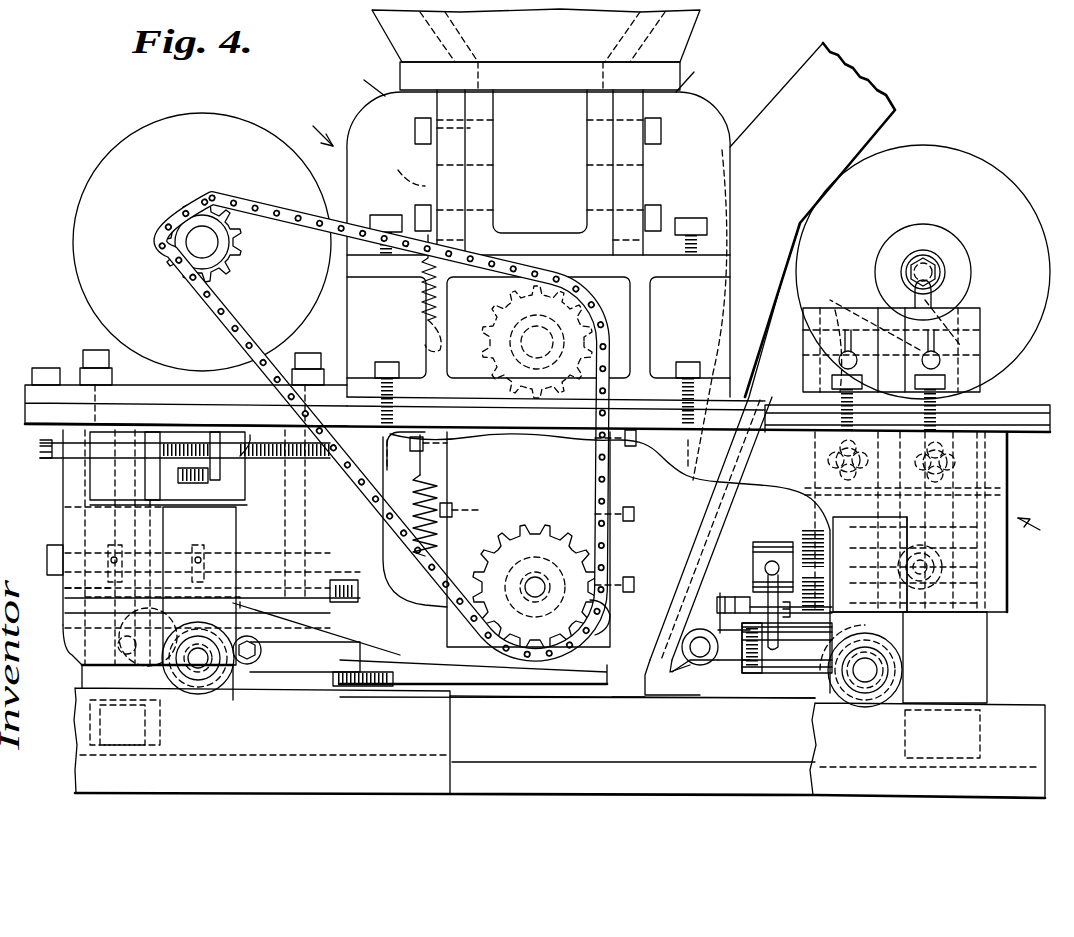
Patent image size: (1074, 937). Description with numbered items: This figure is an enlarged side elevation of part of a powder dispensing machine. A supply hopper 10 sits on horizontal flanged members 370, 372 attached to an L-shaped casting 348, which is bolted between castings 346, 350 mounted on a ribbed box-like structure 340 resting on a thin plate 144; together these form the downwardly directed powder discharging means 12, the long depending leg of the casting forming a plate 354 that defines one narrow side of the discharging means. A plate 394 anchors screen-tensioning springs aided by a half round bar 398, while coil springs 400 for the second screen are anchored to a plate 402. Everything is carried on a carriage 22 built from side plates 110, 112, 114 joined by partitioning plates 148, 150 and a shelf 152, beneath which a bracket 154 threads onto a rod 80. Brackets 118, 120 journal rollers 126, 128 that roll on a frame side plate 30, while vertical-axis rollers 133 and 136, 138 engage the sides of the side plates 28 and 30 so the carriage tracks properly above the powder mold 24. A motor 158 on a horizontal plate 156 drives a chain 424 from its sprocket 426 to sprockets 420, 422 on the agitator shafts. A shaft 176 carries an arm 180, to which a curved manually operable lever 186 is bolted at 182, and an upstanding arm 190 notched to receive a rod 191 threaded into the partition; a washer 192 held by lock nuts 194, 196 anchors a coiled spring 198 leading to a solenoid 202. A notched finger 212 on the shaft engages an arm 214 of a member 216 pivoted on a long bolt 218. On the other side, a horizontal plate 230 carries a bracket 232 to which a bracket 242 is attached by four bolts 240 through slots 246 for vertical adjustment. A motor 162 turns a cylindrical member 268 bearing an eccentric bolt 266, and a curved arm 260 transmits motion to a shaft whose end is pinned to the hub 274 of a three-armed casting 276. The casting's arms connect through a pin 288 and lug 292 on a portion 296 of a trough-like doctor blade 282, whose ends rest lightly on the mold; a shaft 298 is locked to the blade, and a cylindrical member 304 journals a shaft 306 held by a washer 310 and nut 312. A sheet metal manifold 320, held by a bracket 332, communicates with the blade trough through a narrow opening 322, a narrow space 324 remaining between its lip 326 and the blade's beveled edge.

The supply hopper 10 is at (690, 32).
The powder discharging means 12 is at (311, 126).
The carriage 22 is at (1032, 535).
The powder receiver or mold 24 is at (738, 760).
The side plate 28 is at (615, 775).
The side plate 30 is at (440, 782).
The rod 80 is at (386, 657).
The side plate 110 is at (80, 518).
The side plate 112 is at (728, 490).
The side plate 114 is at (1000, 504).
The bracket 118 is at (236, 540).
The bracket 120 is at (60, 415).
The roller 126 is at (225, 692).
The roller 128 is at (830, 690).
The roller 133 is at (975, 720).
The roller 136 is at (122, 725).
The roller 138 is at (162, 735).
The thin plate 144 is at (662, 420).
The partitioning plate 148 is at (298, 500).
The partitioning plate 150 is at (779, 505).
The shelf 152 is at (365, 650).
The bracket 154 is at (325, 610).
The horizontal plate 156 is at (148, 380).
The motor 158 is at (82, 237).
The motor 162 is at (935, 150).
The shaft 176 is at (160, 680).
The arm 180 is at (528, 690).
The bolt connection 182 is at (258, 645).
The curved manually operable lever 186 is at (68, 640).
The upstanding arm 190 is at (150, 432).
The rod 191 is at (60, 462).
The circular plate or washer 192 is at (259, 419).
The lock nut 194 is at (200, 440).
The lock nut 196 is at (218, 440).
The coiled spring 198 is at (212, 480).
The solenoid 202 is at (120, 480).
The notched finger 212 is at (65, 588).
The arm 214 is at (162, 597).
The pivoted member 216 is at (180, 548).
The long bolt 218 is at (55, 548).
The horizontal plate 230 is at (775, 405).
The bracket 232 is at (975, 358).
The bolts 240 is at (928, 358).
The bracket 242 is at (981, 314).
The slots 246 is at (1012, 480).
The curved arm 260 is at (1010, 436).
The bolt 266 is at (935, 262).
The cylindrical member 268 is at (930, 250).
The hub 274 is at (775, 542).
The three-armed casting 276 is at (791, 612).
The doctor blade 282 is at (665, 690).
The pin 288 is at (755, 600).
The lug 292 is at (720, 594).
The portion of the blade 296 is at (727, 647).
The shaft 298 is at (700, 630).
The cylindrical member 304 is at (800, 673).
The shaft 306 is at (752, 673).
The washer 310 is at (905, 640).
The nut 312 is at (838, 700).
The sheet metal manifold 320 is at (680, 560).
The elongated narrow opening 322 is at (608, 612).
The narrow space 324 is at (632, 690).
The lip 326 is at (645, 700).
The bracket 332 is at (690, 480).
The box-like structure 340 is at (732, 292).
The casting 346 is at (366, 130).
The casting 348 is at (558, 100).
The casting 350 is at (700, 120).
The plate 354 is at (420, 643).
The horizontal flanged member 370 is at (360, 73).
The horizontal flanged member 372 is at (708, 71).
The plate 394 is at (401, 168).
The half round bar 398 is at (425, 328).
The coil springs 400 is at (440, 510).
The plate 402 is at (405, 478).
The sprocket 420 is at (545, 300).
The sprocket 422 is at (518, 540).
The chain 424 is at (268, 228).
The sprocket 426 is at (236, 262).